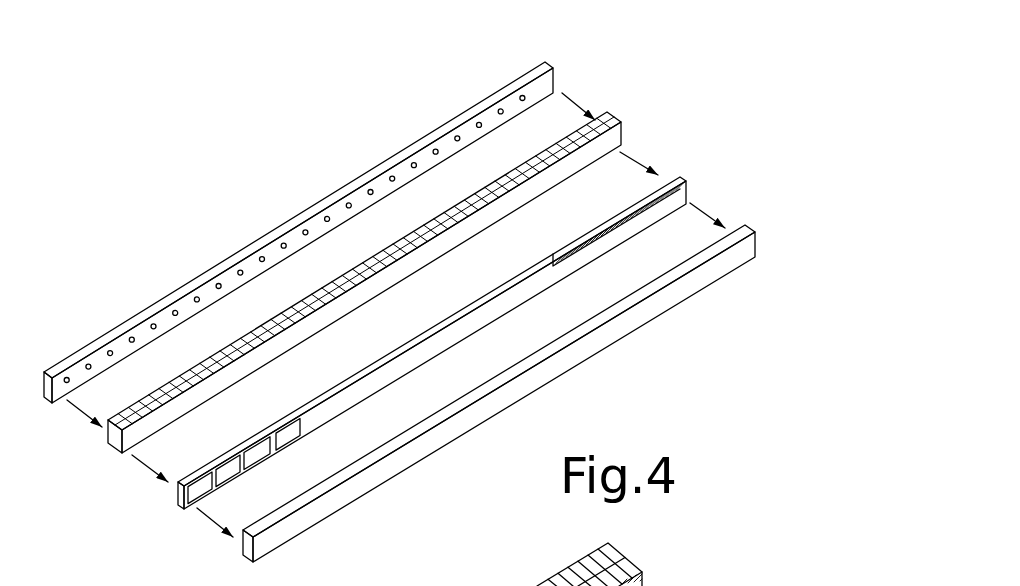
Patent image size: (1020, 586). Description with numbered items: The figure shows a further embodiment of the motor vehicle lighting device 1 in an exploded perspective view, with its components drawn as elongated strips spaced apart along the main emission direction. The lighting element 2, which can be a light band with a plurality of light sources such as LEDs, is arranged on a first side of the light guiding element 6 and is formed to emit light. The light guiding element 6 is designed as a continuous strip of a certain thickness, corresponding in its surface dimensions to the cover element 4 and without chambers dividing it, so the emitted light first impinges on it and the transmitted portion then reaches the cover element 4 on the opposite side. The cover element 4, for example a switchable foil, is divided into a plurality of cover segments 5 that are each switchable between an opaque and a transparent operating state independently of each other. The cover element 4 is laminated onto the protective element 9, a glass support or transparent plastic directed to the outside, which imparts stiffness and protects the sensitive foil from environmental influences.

The motor vehicle lighting device 1 is at (115, 492).
The lighting element 2 is at (567, 65).
The cover element 4 is at (475, 324).
The cover segments 5 is at (665, 210).
The light guiding element 6 is at (630, 125).
The protective element 9 is at (770, 237).